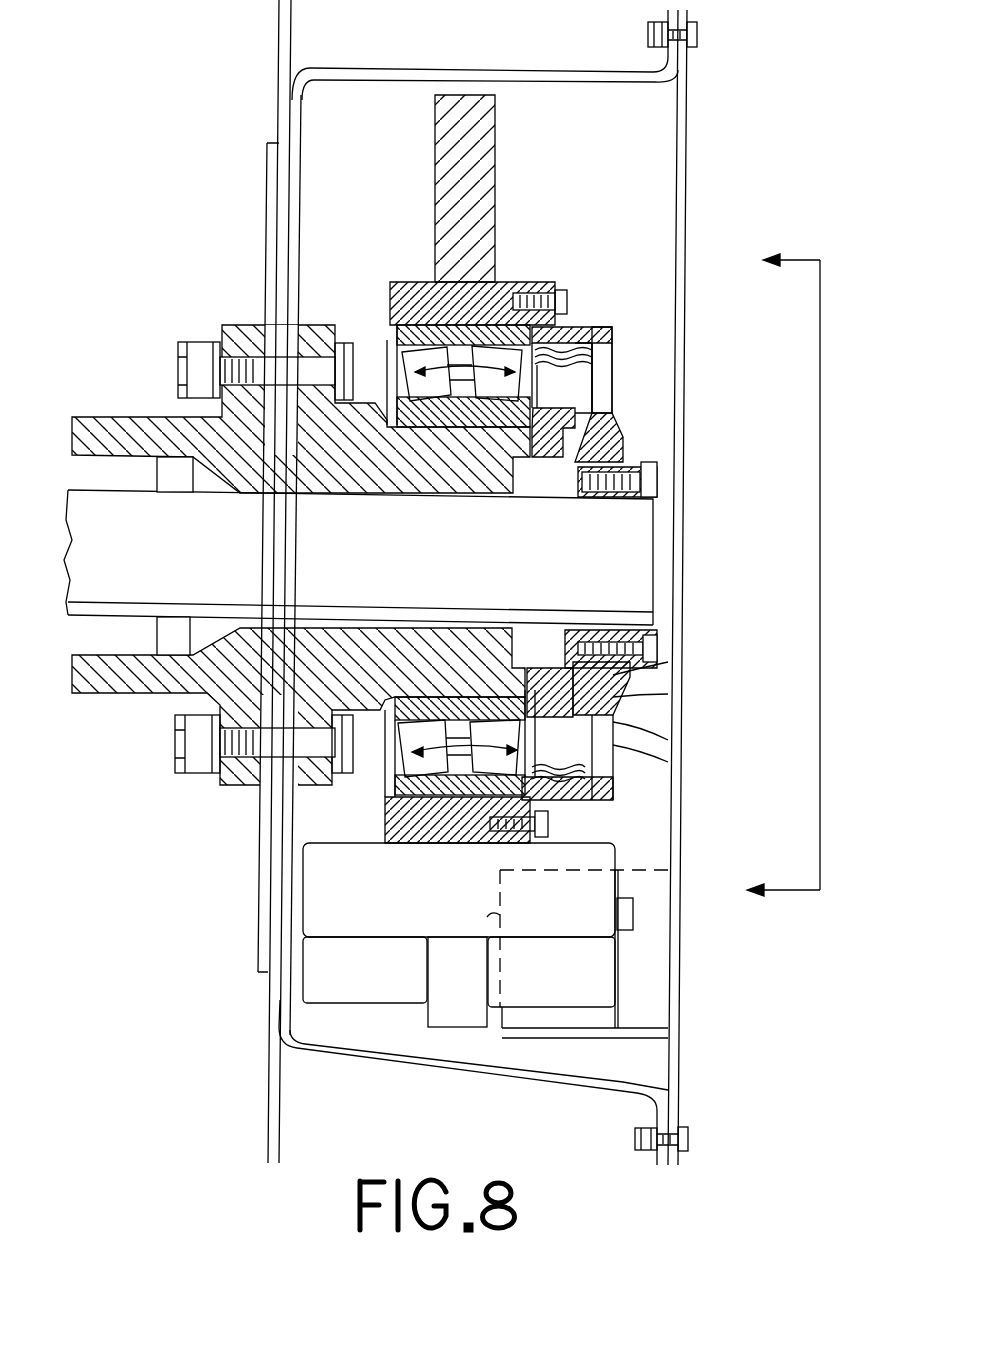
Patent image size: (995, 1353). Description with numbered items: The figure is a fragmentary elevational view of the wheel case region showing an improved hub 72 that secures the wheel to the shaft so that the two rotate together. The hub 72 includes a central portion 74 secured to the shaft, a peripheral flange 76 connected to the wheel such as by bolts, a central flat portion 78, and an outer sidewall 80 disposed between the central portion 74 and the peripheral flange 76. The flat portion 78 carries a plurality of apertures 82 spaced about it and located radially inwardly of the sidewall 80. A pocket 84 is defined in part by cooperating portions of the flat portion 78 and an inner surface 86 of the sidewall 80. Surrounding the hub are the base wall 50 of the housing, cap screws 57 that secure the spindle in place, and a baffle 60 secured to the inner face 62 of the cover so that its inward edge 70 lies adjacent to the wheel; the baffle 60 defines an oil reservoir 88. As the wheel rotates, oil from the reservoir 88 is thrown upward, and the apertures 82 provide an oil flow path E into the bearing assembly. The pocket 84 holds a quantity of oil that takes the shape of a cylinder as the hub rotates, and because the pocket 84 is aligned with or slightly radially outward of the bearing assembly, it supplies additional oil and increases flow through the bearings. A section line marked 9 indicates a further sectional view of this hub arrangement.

The section line of FIG. 9 is at (792, 575).
The base wall 50 is at (297, 248).
The cap screws 57 is at (215, 785).
The baffle 60 is at (637, 1042).
The inner face 62 is at (662, 527).
The inward edge 70 is at (487, 917).
The hub 72 is at (628, 424).
The central portion 74 is at (660, 655).
The peripheral flange 76 is at (553, 322).
The central flat portion 78 is at (613, 705).
The outer sidewall 80 is at (603, 340).
The apertures 82 is at (612, 395).
The pocket 84 is at (535, 338).
The inner surface 86 is at (512, 303).
The reservoir 88 is at (643, 1005).
The oil flow path E is at (617, 362).